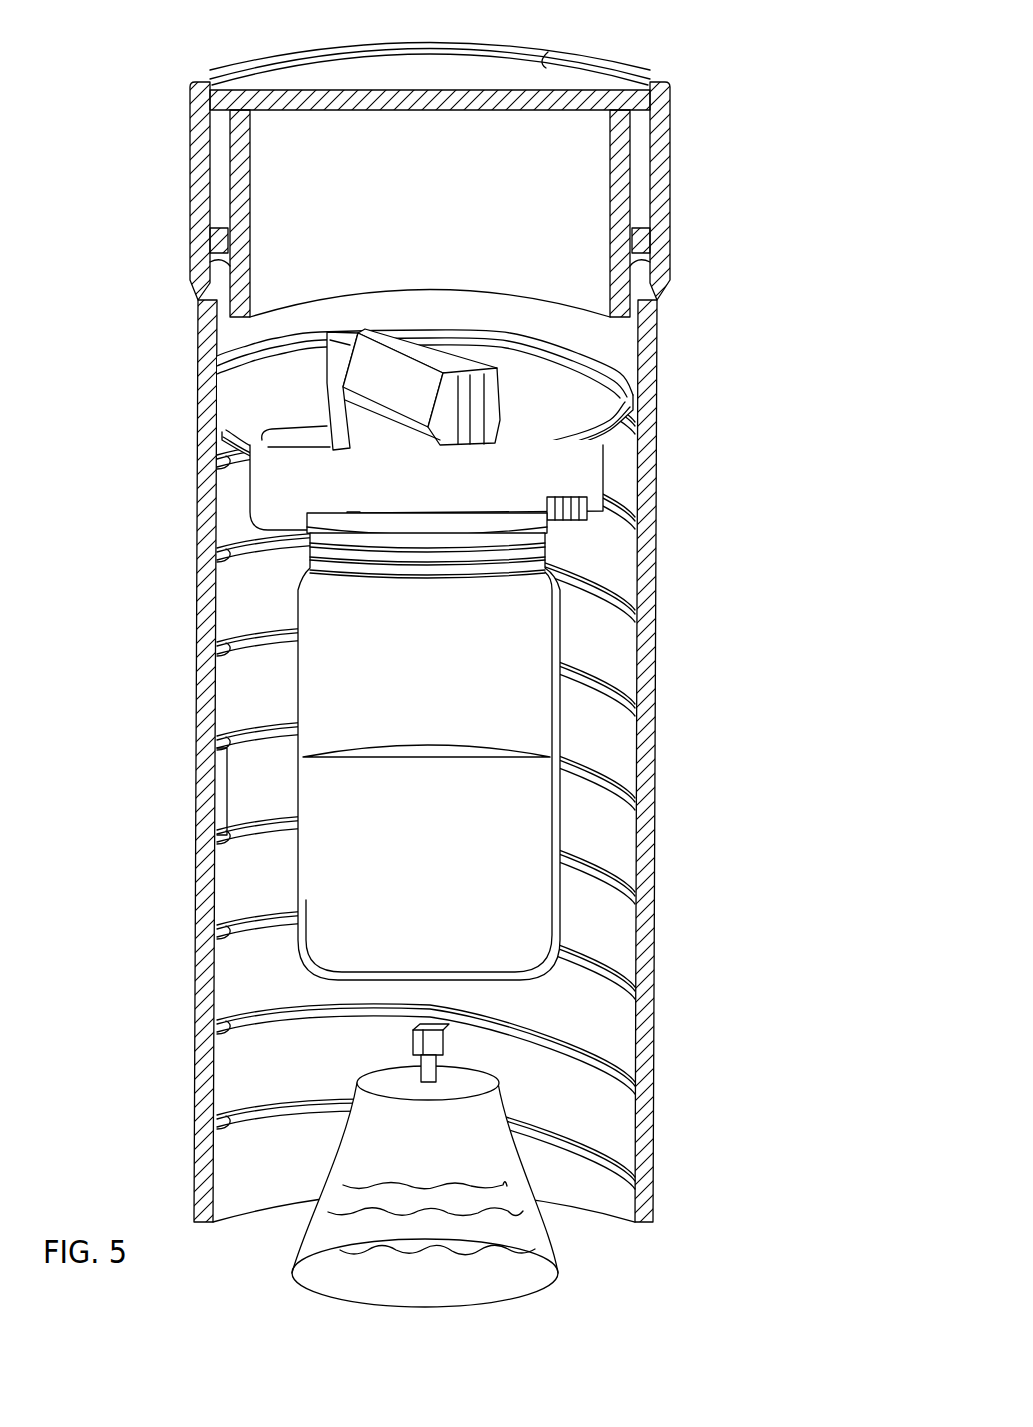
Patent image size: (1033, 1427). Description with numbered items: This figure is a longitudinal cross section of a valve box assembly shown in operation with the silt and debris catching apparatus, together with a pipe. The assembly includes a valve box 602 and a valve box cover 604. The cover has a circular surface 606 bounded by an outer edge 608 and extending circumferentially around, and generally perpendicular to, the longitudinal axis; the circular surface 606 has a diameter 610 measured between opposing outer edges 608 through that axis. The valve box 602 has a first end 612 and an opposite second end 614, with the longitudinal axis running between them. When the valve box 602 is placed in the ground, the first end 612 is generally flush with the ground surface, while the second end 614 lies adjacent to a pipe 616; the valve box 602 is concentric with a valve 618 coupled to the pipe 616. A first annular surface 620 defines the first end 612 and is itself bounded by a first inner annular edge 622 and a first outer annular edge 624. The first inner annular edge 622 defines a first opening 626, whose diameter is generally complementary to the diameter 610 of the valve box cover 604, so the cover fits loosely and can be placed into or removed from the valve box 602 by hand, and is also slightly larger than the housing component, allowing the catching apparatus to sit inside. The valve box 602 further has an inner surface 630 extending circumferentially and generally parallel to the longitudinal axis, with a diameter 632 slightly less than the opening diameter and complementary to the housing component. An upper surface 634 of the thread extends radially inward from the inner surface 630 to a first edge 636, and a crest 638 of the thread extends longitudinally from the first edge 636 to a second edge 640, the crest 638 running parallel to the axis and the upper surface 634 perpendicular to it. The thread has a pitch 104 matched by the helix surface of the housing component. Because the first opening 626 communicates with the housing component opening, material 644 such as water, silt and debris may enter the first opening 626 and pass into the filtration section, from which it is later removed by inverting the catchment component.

The pitch 104 is at (258, 783).
The valve box 602 is at (482, 657).
The valve box cover 604 is at (443, 62).
The circular surface 606 is at (407, 63).
The outer edge 608 is at (268, 60).
The diameter 610 is at (430, 147).
The first end 612 is at (465, 162).
The second end 614 is at (523, 1165).
The pipe 616 is at (320, 1177).
The valve 618 is at (437, 1047).
The first annular surface 620 is at (453, 46).
The first inner annular edge 622 is at (210, 76).
The first outer annular edge 624 is at (192, 82).
The first opening 626 is at (548, 52).
The inner surface 630 is at (451, 324).
The diameter 632 is at (428, 746).
The upper surface 634 is at (213, 540).
The first edge 636 is at (432, 766).
The crest 638 is at (270, 547).
The second edge 640 is at (207, 574).
The material 644 is at (418, 748).